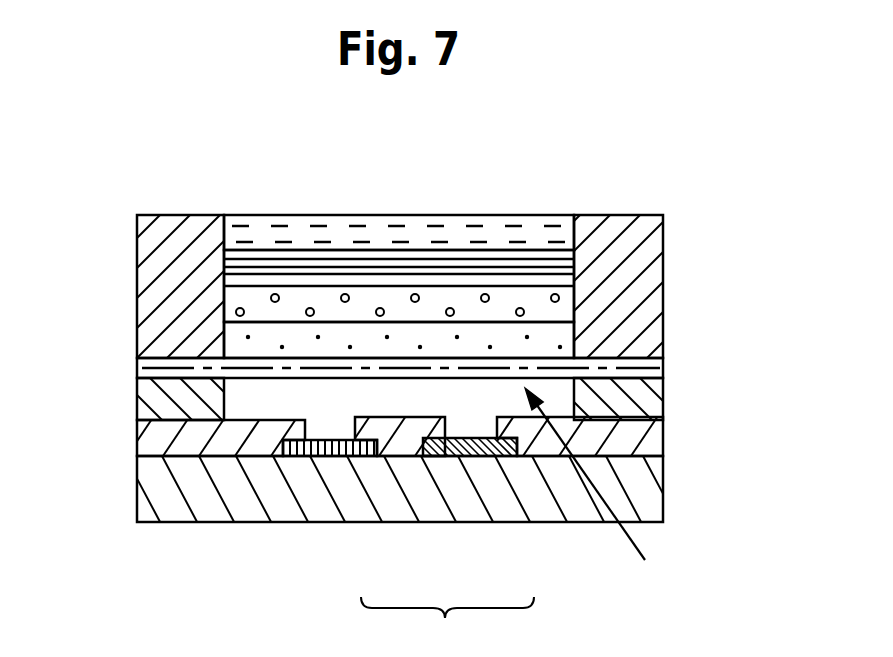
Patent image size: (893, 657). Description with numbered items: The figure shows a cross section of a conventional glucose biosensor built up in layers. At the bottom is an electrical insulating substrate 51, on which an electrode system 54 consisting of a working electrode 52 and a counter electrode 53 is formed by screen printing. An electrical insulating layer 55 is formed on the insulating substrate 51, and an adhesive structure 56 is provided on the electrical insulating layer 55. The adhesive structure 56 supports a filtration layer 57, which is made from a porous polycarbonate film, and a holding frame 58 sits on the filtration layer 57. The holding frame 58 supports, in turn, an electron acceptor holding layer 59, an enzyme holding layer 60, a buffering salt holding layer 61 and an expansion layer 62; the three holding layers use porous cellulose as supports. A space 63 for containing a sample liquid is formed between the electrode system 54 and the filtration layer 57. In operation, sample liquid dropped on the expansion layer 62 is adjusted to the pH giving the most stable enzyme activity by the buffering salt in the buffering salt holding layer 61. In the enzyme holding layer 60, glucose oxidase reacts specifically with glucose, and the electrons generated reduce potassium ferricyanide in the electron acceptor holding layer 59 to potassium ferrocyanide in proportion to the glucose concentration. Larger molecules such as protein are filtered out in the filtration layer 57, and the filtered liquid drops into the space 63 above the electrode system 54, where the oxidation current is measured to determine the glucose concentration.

The electrical insulating substrate 51 is at (157, 492).
The working electrode 52 is at (330, 450).
The counter electrode 53 is at (478, 444).
The electrode system 54 is at (447, 627).
The electrical insulating layer 55 is at (355, 424).
The adhesive structure 56 is at (637, 400).
The filtration layer 57 is at (137, 368).
The holding frame 58 is at (157, 288).
The electron acceptor holding layer 59 is at (558, 333).
The enzyme holding layer 60 is at (558, 298).
The buffering salt holding layer 61 is at (652, 213).
The expansion layer 62 is at (363, 222).
The space 63 is at (597, 493).